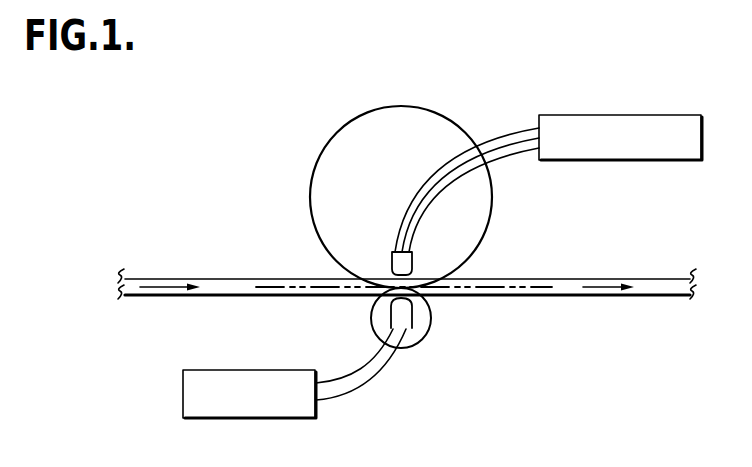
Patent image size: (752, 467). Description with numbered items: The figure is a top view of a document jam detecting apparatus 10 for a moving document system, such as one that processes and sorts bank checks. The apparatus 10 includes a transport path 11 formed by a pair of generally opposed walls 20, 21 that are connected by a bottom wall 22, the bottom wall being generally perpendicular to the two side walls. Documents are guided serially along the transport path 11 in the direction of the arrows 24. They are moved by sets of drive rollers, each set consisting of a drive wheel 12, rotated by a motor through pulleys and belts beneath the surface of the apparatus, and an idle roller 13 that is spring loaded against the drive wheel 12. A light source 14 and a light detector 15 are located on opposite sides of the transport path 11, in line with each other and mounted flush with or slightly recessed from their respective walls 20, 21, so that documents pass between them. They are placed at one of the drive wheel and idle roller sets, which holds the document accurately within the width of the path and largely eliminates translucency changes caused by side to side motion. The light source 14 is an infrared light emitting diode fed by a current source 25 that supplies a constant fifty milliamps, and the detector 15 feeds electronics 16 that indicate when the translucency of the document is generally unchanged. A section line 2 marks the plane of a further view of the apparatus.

The document jam detecting apparatus 10 is at (152, 141).
The transport path 11 is at (90, 304).
The drive wheel 12 is at (337, 146).
The idle roller 13 is at (417, 335).
The light source 14 is at (412, 318).
The light detector 15 is at (392, 262).
The electronics 16 is at (631, 115).
The wall 20 is at (238, 292).
The wall 21 is at (206, 281).
The bottom wall 22 is at (133, 282).
The arrows 24 is at (163, 288).
The current source 25 is at (303, 418).
The section line 2- 2 is at (256, 286).